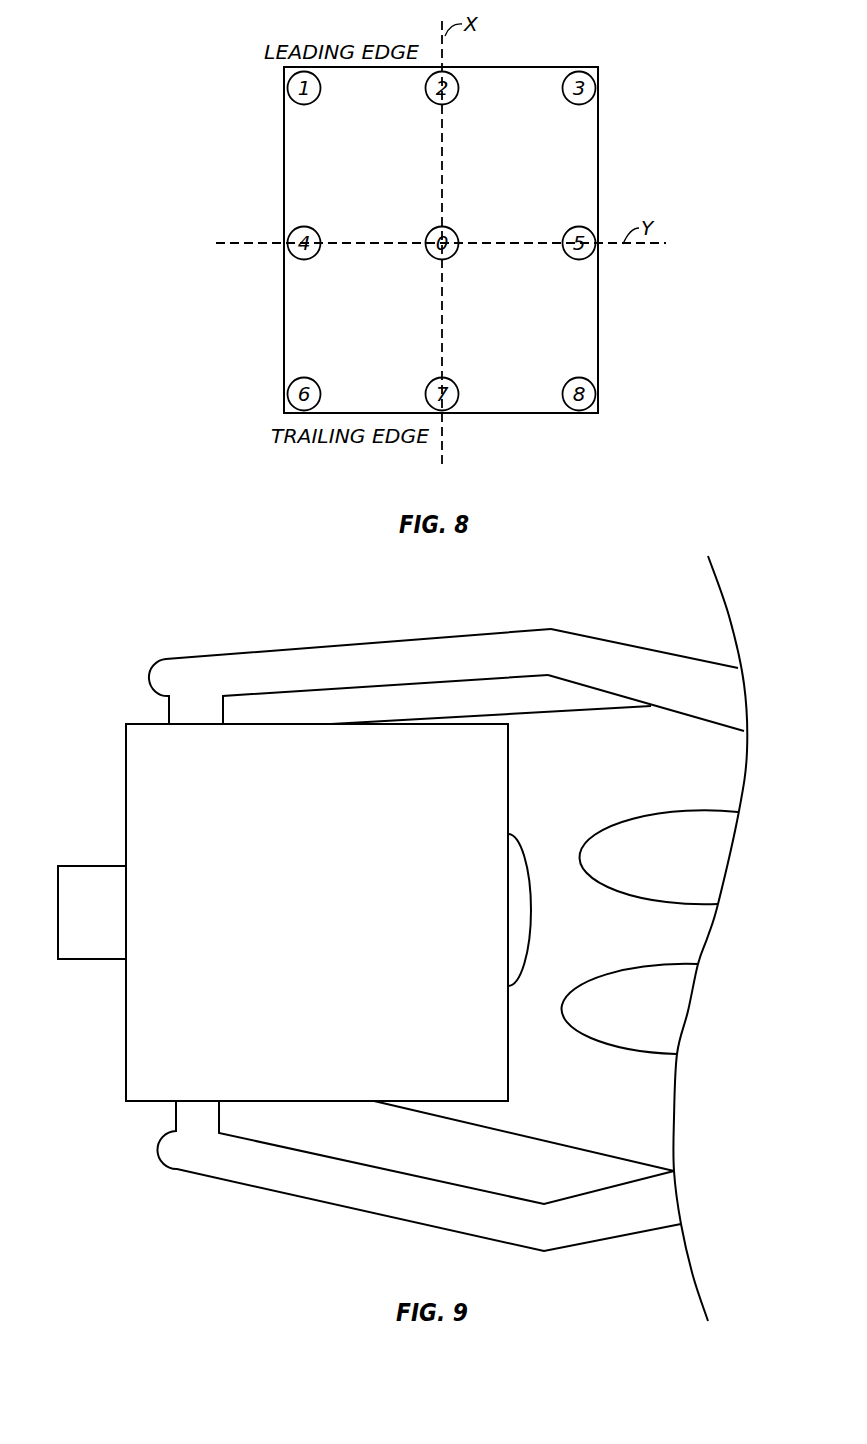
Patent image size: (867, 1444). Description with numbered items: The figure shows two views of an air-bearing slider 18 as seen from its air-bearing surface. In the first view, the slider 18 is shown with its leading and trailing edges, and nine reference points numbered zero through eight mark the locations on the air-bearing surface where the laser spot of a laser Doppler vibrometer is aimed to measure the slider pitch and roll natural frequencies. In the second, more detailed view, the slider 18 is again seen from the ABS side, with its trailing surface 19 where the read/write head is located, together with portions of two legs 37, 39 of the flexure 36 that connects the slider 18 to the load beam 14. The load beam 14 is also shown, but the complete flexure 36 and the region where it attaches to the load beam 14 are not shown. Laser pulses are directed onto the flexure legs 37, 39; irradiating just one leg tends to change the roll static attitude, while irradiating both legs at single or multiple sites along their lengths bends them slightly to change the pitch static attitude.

In FIG. 9, the load beam 14 is at (655, 1120).
In FIG. 8, the air-bearing slider 18 is at (597, 170).
In FIG. 9, the air-bearing slider 18 is at (140, 1038).
In FIG. 9, the trailing surface 19 is at (123, 818).
In FIG. 9, the flexure 36 is at (643, 663).
In FIG. 9, the flexure leg 37 is at (265, 660).
In FIG. 9, the flexure leg 39 is at (258, 1168).